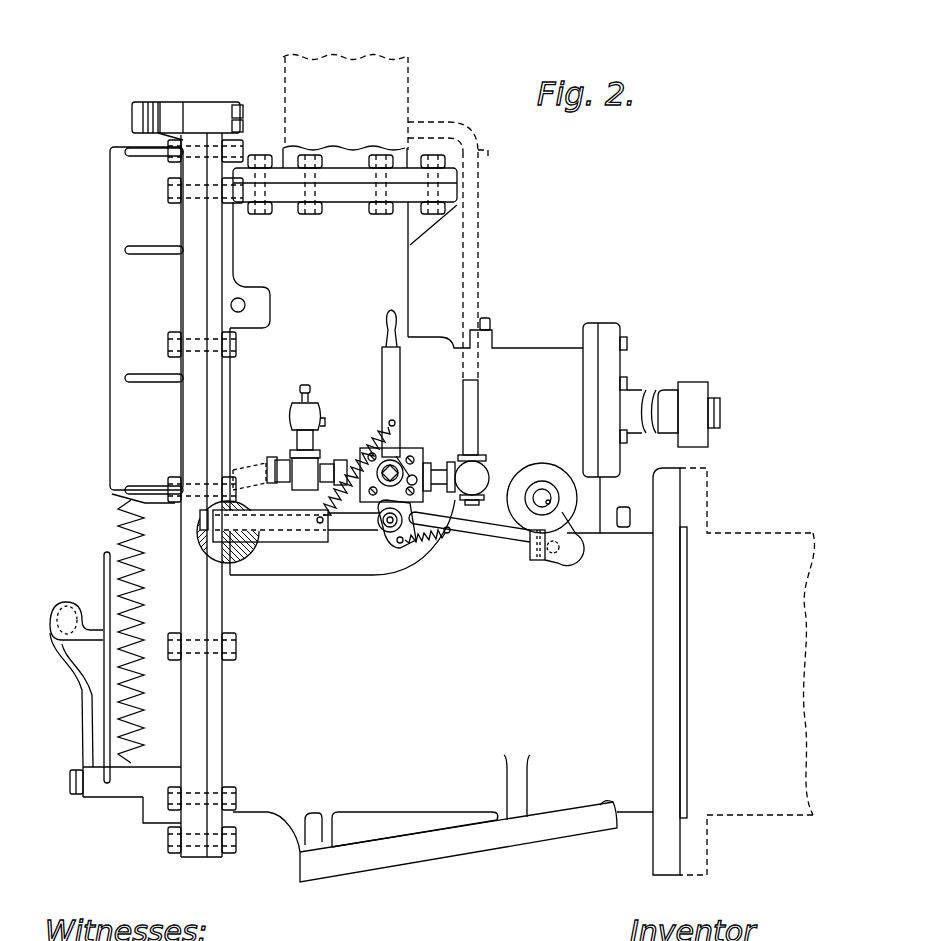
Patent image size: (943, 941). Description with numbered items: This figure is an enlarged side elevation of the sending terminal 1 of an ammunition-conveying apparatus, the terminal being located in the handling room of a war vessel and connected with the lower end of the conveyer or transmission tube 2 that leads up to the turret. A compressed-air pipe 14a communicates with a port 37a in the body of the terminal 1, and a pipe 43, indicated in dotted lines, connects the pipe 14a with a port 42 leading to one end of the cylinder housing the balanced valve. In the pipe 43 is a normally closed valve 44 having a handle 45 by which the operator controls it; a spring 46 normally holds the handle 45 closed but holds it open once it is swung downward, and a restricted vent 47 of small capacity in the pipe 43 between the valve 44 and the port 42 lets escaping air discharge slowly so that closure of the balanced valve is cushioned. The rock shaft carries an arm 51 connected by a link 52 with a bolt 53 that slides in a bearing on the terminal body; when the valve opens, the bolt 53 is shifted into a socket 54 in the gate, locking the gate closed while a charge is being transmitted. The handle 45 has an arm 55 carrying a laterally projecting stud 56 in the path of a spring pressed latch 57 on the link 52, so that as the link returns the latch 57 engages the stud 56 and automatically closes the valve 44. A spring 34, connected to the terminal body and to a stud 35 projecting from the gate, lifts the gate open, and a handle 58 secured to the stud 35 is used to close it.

The sending terminal 1 is at (448, 655).
The conveyer or transmission tube 2 is at (768, 518).
The pipe 14a is at (408, 65).
The spring 34 is at (117, 527).
The stud 35 is at (68, 782).
The port 37a is at (475, 388).
The port 42 is at (254, 465).
The pipe 43 is at (478, 250).
The valve 44 is at (404, 450).
The handle 45 is at (401, 367).
The spring 46 is at (372, 430).
The restricted vent 47 is at (310, 396).
The arm 51 is at (568, 532).
The link 52 is at (499, 543).
The bolt 53 is at (358, 531).
The socket 54 is at (198, 518).
The arm 55 is at (472, 457).
The stud 56 is at (415, 478).
The spring pressed latch 57 is at (425, 546).
The handle 58 is at (68, 603).